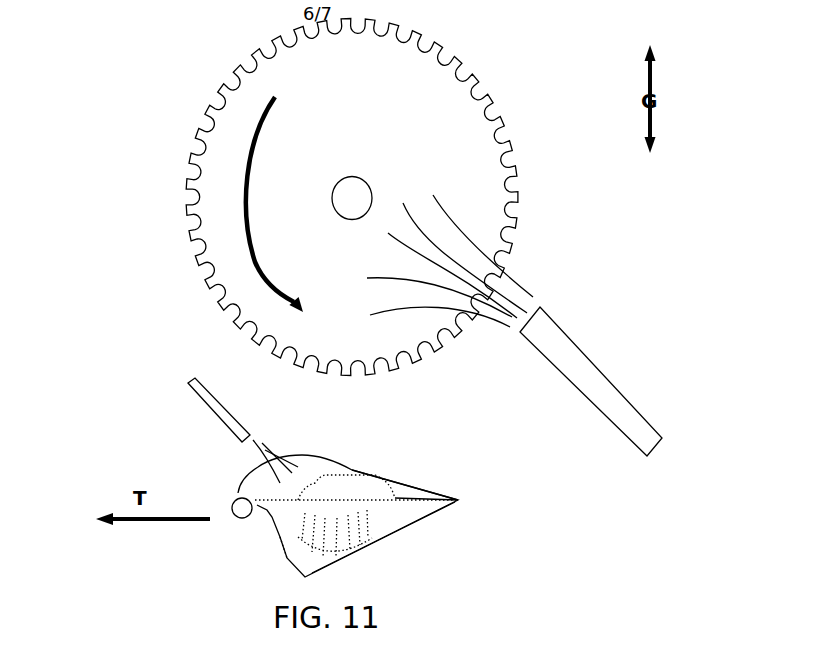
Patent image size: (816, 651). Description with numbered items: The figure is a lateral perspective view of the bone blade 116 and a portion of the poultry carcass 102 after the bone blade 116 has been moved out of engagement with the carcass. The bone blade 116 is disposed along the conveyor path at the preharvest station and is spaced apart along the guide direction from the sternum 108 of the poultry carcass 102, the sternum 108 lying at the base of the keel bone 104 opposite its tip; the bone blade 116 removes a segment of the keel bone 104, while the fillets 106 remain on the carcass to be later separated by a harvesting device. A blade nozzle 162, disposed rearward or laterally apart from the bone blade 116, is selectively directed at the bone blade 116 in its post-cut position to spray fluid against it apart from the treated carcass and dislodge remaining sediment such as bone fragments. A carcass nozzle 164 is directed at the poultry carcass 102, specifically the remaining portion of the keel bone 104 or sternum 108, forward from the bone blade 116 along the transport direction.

The bone blade 116 is at (397, 138).
The blade nozzle 162 is at (562, 353).
The carcass nozzle 164 is at (195, 398).
The poultry carcass 102 is at (253, 475).
The keel bone 104 is at (358, 480).
The fillet 106 is at (310, 475).
The sternum 108 is at (347, 507).